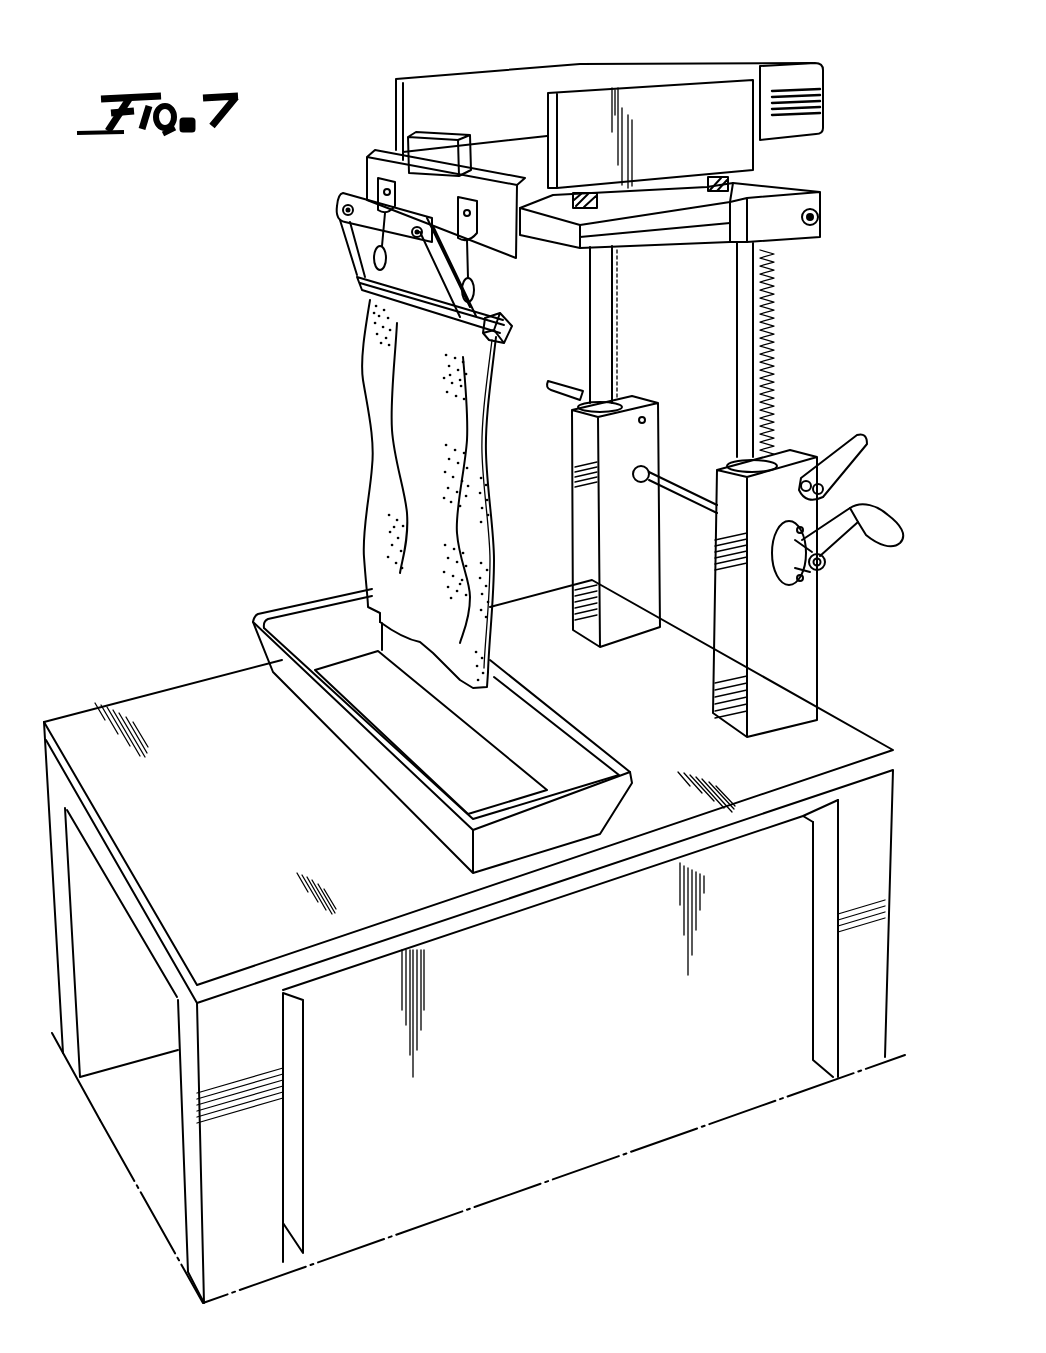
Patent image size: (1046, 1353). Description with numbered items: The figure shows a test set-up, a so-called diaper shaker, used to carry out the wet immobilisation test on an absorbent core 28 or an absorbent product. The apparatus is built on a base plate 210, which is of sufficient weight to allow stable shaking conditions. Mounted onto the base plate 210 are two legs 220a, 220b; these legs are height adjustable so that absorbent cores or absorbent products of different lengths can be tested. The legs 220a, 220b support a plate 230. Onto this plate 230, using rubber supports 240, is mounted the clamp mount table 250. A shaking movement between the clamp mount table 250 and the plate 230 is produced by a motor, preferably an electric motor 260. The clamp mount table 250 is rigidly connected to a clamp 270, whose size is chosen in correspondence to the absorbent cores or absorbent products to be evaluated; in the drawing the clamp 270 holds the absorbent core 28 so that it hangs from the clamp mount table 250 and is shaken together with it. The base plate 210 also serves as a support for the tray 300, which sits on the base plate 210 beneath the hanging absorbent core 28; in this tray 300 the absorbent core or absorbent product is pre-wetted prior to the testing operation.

The base plate 210 is at (238, 869).
The tray 300 is at (302, 623).
The absorbent core 28 is at (413, 470).
The clamp 270 is at (358, 278).
The clamp mount table 250 is at (483, 157).
The electric motor 260 is at (768, 62).
The plate 230 is at (765, 188).
The rubber supports 240 is at (710, 190).
The leg 220a is at (637, 440).
The leg 220b is at (800, 640).